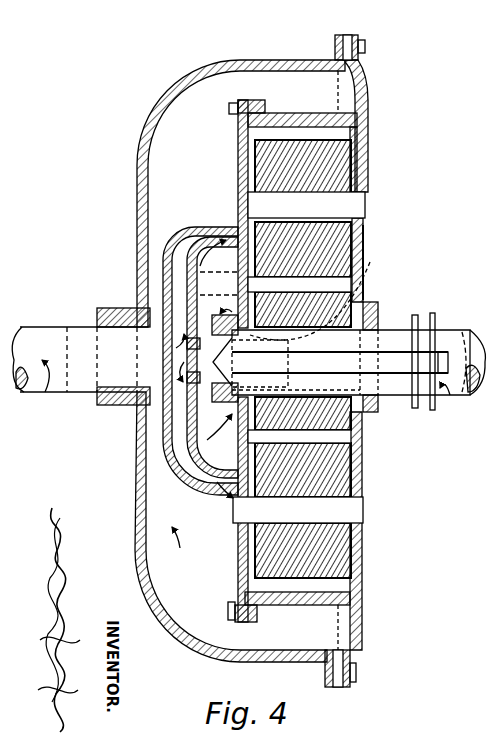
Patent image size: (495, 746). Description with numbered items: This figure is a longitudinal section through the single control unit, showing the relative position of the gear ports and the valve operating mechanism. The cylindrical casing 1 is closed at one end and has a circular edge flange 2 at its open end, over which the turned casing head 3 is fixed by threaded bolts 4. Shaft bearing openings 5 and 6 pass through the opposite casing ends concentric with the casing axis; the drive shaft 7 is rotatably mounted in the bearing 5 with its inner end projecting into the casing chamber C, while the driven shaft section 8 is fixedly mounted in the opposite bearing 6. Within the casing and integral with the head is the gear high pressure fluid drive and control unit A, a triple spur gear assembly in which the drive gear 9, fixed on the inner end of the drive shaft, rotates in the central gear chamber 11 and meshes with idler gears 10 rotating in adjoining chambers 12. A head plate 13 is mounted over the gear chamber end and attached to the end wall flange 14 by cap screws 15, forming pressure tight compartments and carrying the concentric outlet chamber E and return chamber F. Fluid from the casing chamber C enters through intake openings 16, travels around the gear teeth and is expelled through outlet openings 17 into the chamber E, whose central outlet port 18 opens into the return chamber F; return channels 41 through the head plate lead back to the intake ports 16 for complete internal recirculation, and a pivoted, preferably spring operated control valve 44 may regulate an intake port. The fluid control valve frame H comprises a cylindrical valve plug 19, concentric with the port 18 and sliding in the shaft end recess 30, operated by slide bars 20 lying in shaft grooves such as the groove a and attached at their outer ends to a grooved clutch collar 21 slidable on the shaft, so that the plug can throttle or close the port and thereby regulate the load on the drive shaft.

The single control unit casing 1 is at (266, 60).
The circular edge flange 2 is at (336, 40).
The casing head 3 is at (348, 36).
The threaded bolts 4 is at (365, 45).
The shaft bearing opening 5 is at (374, 314).
The shaft bearing opening 6 is at (125, 318).
The drive shaft 7 is at (467, 340).
The driven shaft section 8 is at (34, 328).
The drive gear 9 is at (356, 290).
The idler gears 10 is at (352, 186).
The central gear chamber 11 is at (354, 302).
The gear chambers 12 is at (362, 166).
The head plate 13 is at (236, 562).
The end wall flange 14 is at (256, 104).
The cap screws 15 is at (229, 109).
The fluid intake openings 16 is at (366, 256).
The fluid outlet openings 17 is at (240, 205).
The central outlet port 18 is at (192, 338).
The valve plug 19 is at (192, 395).
The slide bars 20 is at (402, 356).
The clutch collar 21 is at (434, 316).
The shaft end cylindrical recess 30 is at (356, 380).
The fluid return channels 41 is at (196, 191).
The pivoted control valve 44 is at (372, 262).
The gear high pressure fluid drive and control unit A is at (316, 115).
The casing chamber C is at (169, 556).
The outlet discharge chamber E is at (216, 258).
The fluid return chamber F is at (182, 262).
The fluid control valve frame H is at (419, 437).
The shaft slide groove a is at (378, 348).